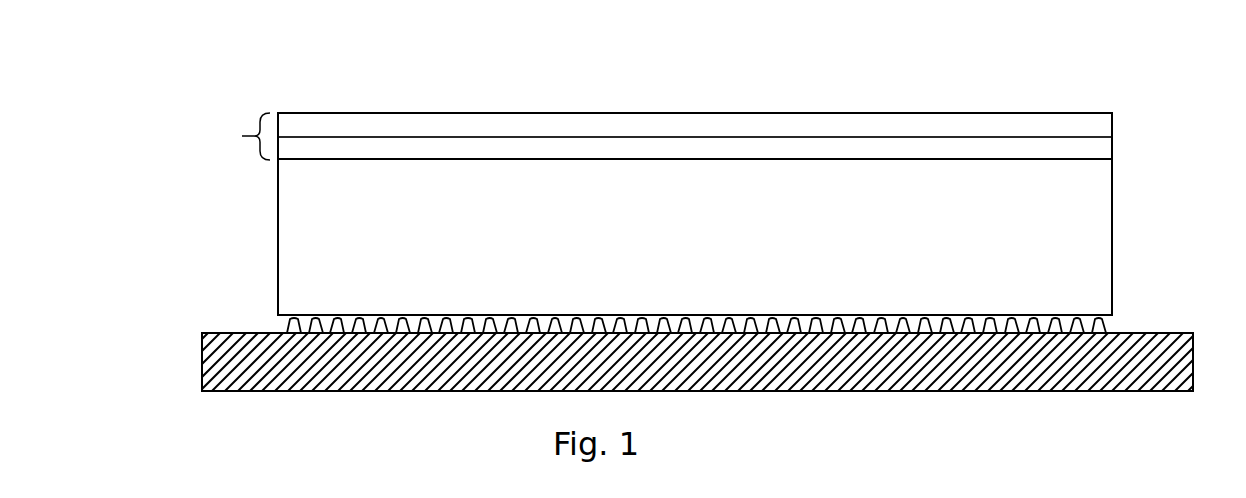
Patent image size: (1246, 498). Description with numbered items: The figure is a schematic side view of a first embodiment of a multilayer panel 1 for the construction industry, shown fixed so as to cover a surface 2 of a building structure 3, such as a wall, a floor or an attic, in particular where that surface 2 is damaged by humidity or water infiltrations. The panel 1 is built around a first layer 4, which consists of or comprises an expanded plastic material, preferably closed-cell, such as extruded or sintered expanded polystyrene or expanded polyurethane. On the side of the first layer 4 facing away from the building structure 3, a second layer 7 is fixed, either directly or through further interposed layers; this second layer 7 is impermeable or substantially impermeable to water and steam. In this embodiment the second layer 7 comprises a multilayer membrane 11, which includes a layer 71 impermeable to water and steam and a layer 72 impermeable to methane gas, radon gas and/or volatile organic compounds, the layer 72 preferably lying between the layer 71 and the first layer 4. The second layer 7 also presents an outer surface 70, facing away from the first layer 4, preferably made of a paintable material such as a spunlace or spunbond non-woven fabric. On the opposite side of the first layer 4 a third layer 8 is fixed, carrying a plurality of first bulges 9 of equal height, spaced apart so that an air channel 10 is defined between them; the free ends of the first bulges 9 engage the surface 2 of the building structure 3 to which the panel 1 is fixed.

The multilayer panel 1 is at (1050, 82).
The surface 2 is at (1156, 330).
The building structure 3 is at (1118, 380).
The first layer 4 is at (306, 242).
The second layer 7 is at (663, 136).
The third layer 8 is at (281, 322).
The first bulges 9 is at (517, 327).
The air channel 10 is at (962, 334).
The multilayer membrane 11 is at (785, 111).
The outer surface 70 is at (406, 110).
The water and steam impermeable layer 71 is at (1104, 128).
The gas impermeable layer 72 is at (1099, 150).